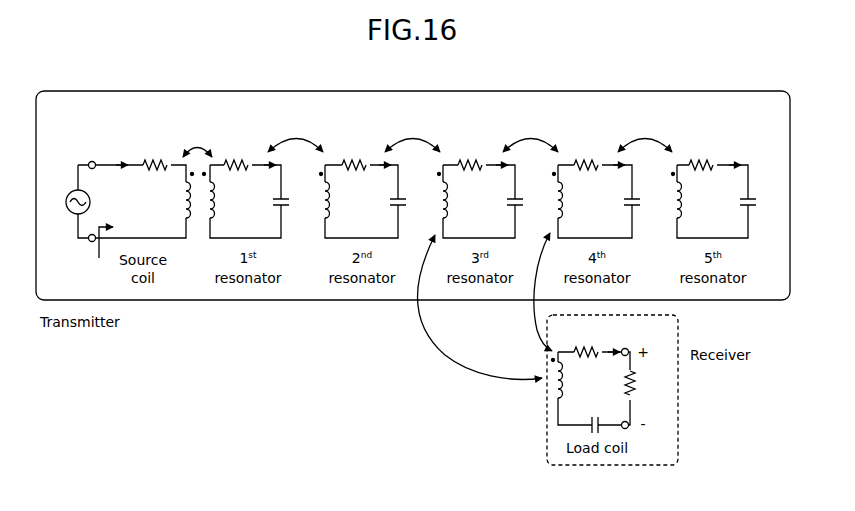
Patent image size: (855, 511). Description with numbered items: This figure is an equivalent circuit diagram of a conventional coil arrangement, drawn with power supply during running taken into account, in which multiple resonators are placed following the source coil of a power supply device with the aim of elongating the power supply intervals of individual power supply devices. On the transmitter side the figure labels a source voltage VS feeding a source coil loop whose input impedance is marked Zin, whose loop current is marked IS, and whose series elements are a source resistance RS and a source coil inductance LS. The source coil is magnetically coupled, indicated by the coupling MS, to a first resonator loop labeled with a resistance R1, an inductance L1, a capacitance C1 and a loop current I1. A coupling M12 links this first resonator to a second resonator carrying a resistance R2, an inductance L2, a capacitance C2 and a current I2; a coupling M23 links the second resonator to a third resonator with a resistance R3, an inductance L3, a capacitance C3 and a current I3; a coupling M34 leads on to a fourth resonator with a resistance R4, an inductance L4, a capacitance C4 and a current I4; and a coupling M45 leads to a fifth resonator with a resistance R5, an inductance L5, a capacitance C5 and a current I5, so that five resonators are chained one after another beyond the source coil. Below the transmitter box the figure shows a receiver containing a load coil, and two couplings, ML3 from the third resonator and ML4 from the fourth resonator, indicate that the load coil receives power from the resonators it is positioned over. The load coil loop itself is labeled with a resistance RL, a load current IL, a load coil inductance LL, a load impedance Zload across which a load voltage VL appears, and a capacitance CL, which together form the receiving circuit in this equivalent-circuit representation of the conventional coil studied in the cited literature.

The source voltage VS is at (66, 202).
The input impedance Zin is at (110, 226).
The source current IS is at (120, 152).
The source resistance RS is at (155, 155).
The source coil inductance LS is at (177, 196).
The mutual inductance source to 1st resonator MS is at (197, 136).
The 1st resonator resistance R1 is at (236, 155).
The 1st resonator inductance L1 is at (221, 200).
The 1st resonator capacitance C1 is at (292, 204).
The 1st resonator current I1 is at (269, 181).
The mutual inductance 1st to 2nd M12 is at (295, 132).
The 2nd resonator resistance R2 is at (354, 155).
The 2nd resonator inductance L2 is at (336, 200).
The 2nd resonator capacitance C2 is at (410, 204).
The 2nd resonator current I2 is at (385, 181).
The mutual inductance 2nd to 3rd M23 is at (412, 132).
The 3rd resonator resistance R3 is at (470, 155).
The 3rd resonator inductance L3 is at (454, 200).
The 3rd resonator capacitance C3 is at (527, 204).
The 3rd resonator current I3 is at (502, 181).
The mutual inductance 3rd to 4th M34 is at (530, 132).
The 4th resonator resistance R4 is at (586, 155).
The 4th resonator inductance L4 is at (570, 200).
The 4th resonator capacitance C4 is at (644, 204).
The 4th resonator current I4 is at (619, 181).
The mutual inductance 4th to 5th M45 is at (645, 132).
The 5th resonator resistance R5 is at (701, 155).
The 5th resonator inductance L5 is at (688, 200).
The 5th resonator capacitance C5 is at (760, 204).
The 5th resonator current I5 is at (735, 181).
The mutual inductance load to 3rd ML3 is at (480, 307).
The mutual inductance load to 4th ML4 is at (530, 292).
The load coil resistance RL is at (586, 342).
The load current IL is at (615, 365).
The load coil inductance LL is at (568, 380).
The load impedance Zload is at (611, 383).
The load voltage VL is at (644, 385).
The load coil capacitance CL is at (593, 415).